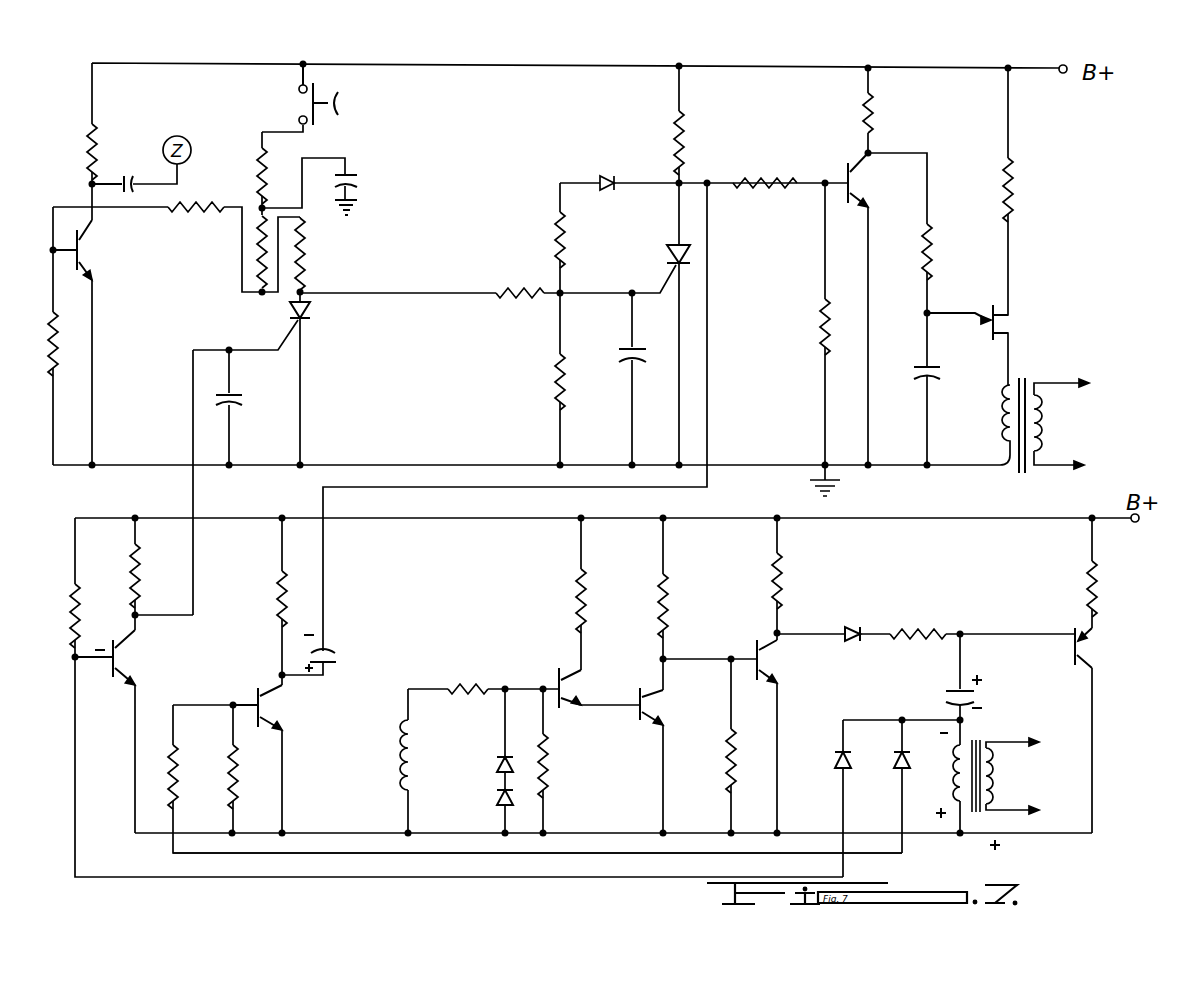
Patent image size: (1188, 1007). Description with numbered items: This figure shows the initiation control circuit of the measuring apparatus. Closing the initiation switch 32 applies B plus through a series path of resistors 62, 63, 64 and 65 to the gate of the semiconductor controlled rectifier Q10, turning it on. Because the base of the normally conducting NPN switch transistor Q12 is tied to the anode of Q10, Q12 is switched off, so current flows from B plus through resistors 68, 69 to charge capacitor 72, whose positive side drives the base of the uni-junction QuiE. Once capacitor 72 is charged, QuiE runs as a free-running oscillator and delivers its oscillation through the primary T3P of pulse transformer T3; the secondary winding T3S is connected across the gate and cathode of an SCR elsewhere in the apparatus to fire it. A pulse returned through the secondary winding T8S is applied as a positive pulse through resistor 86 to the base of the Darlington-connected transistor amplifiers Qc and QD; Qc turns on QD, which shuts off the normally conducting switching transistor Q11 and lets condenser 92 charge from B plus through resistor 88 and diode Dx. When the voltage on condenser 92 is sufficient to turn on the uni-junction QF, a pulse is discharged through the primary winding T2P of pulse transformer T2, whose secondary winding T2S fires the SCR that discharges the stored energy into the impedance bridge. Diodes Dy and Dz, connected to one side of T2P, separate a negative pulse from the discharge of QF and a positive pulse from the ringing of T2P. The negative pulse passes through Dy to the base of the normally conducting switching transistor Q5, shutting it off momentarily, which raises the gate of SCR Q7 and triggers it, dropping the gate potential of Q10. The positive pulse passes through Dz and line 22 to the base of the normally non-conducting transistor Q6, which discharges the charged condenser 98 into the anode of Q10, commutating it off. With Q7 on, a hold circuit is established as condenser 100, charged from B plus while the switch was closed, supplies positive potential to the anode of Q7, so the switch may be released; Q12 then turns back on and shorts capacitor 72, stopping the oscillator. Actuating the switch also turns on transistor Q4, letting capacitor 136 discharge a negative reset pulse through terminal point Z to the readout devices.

The capacitor 136 is at (114, 158).
The resistor 62 is at (260, 146).
The initiation switch 32 is at (318, 117).
The condenser 100 is at (357, 182).
The resistor 63 is at (258, 242).
The resistor 64 is at (303, 245).
The resistor 65 is at (520, 240).
The transistor Q4 is at (96, 246).
The SCR device Q7 is at (307, 315).
The semiconductor controlled rectifier Q10 is at (665, 256).
The resistor 68 is at (876, 104).
The NPN switch transistor Q12 is at (858, 184).
The resistor 69 is at (932, 237).
The uni-junction QuiE is at (1010, 318).
The capacitor 72 is at (955, 360).
The pulse transformer T3 is at (1018, 474).
The primary winding T3P is at (1000, 408).
The secondary winding T3S is at (1048, 414).
The switching transistor Q5 is at (125, 655).
The condenser 98 is at (333, 655).
The transistor Q6 is at (295, 700).
The resistor 86 is at (457, 688).
The secondary winding T8S is at (410, 750).
The transistor amplifier Qc is at (573, 683).
The transistor amplifier QD is at (655, 705).
The switching transistor Q11 is at (770, 663).
The diode Dx is at (853, 628).
The resistor 88 is at (922, 620).
The condenser 92 is at (945, 690).
The uni-junction QF is at (1085, 648).
The diode Dy is at (840, 758).
The diode Dz is at (897, 760).
The pulse transformer T2 is at (980, 742).
The primary winding T2P is at (955, 764).
The secondary winding T2S is at (1002, 776).
The line 22 is at (885, 855).